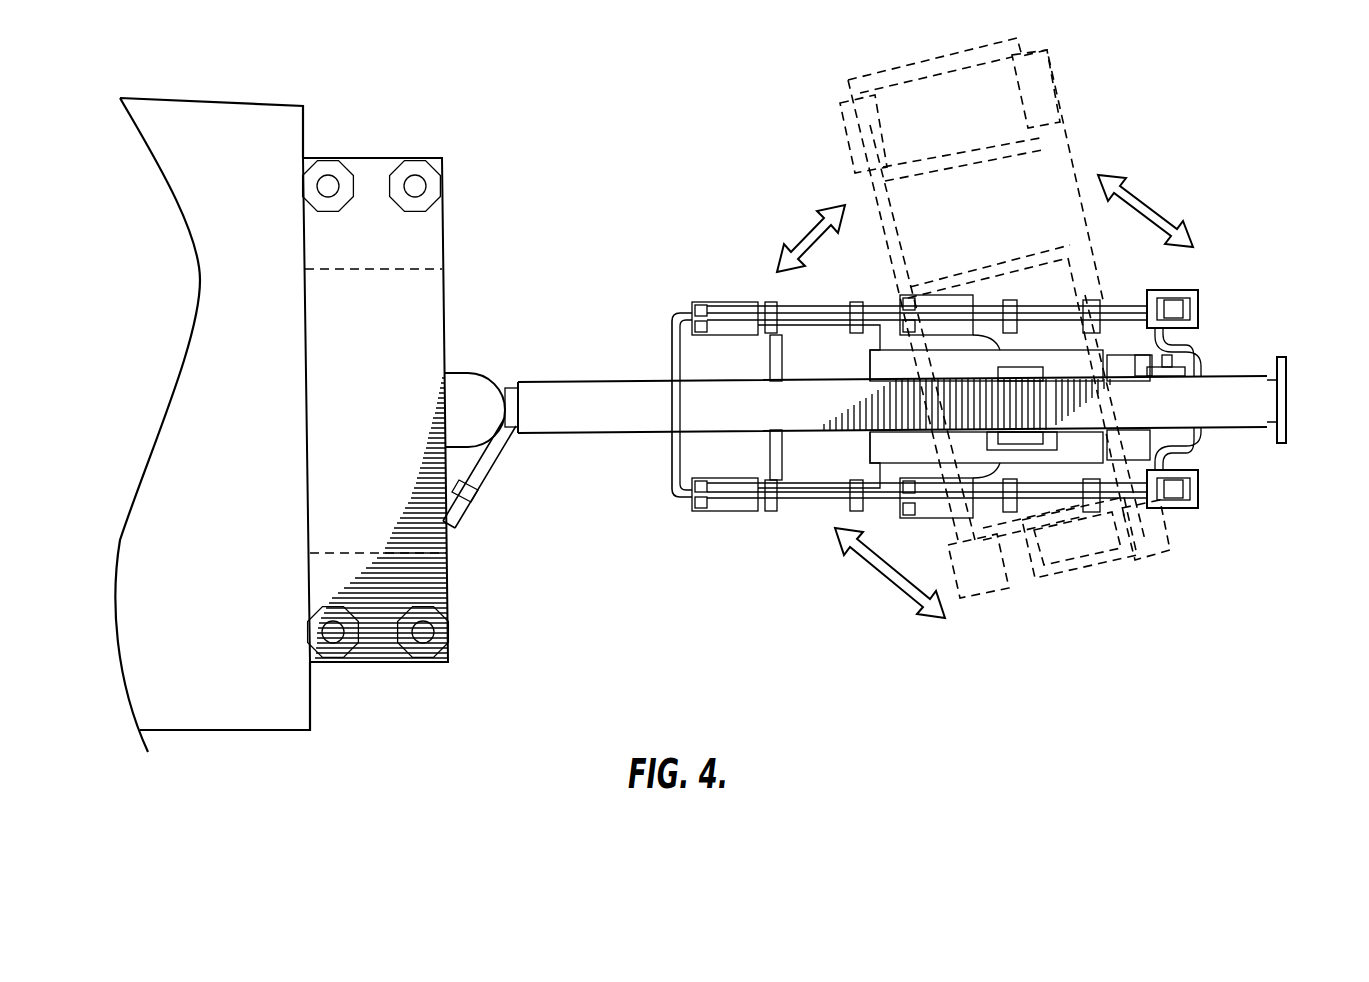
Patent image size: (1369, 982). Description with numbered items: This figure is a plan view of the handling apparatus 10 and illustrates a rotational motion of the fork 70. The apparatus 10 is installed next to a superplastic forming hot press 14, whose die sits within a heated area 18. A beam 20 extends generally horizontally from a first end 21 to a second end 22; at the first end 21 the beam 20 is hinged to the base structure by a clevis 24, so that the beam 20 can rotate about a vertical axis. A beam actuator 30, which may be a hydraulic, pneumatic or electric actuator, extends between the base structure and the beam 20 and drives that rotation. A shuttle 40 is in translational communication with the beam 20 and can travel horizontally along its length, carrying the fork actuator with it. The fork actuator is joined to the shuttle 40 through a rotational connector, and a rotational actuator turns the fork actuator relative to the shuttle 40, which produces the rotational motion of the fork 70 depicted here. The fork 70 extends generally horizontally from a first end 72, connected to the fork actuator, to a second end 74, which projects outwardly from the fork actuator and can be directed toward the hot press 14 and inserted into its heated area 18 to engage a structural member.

The handling apparatus 10 is at (1240, 204).
The superplastic forming hot press 14 is at (274, 729).
The heated area 18 is at (395, 322).
The beam 20 is at (1230, 430).
The first end 21 is at (543, 381).
The second end 22 is at (1248, 372).
The clevis 24 is at (470, 373).
The beam actuator 30 is at (467, 517).
The shuttle 40 is at (1025, 443).
The fork 70 is at (800, 500).
The first end 72 is at (673, 497).
The second end 74 is at (1200, 455).